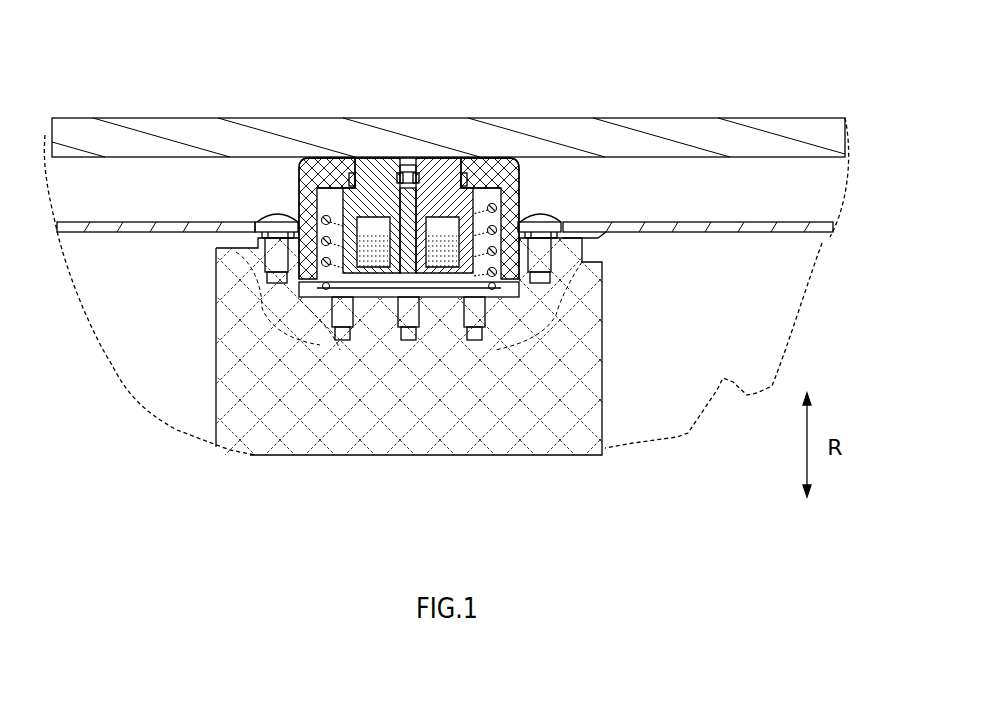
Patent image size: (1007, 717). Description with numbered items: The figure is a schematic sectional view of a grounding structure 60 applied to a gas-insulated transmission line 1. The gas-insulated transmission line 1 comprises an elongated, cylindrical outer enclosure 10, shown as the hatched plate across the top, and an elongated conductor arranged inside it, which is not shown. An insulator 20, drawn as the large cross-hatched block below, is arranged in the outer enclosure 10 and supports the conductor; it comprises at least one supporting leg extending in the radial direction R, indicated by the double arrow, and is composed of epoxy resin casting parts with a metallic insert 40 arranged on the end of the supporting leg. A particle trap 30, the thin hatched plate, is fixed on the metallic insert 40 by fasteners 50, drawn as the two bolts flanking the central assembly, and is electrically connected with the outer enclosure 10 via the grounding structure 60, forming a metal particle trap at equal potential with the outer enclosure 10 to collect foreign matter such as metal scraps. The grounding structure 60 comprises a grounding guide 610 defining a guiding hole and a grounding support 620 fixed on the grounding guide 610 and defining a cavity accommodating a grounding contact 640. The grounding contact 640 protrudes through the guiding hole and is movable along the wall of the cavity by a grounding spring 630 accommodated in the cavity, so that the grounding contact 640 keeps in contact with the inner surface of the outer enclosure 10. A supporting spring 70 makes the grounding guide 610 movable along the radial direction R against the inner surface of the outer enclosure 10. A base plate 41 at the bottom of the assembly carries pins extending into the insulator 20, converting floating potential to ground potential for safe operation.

The gas-insulated transmission line 1 is at (120, 77).
The outer enclosure 10 is at (692, 138).
The insulator 20 is at (240, 397).
The particle trap 30 is at (148, 228).
The metallic insert 40 is at (557, 308).
The bottom plate 41 is at (315, 288).
The fasteners 50 is at (270, 214).
The grounding structure 60 is at (552, 259).
The supporting spring 70 is at (497, 250).
The grounding guide 610 is at (326, 174).
The grounding support 620 is at (487, 193).
The grounding spring 630 is at (437, 273).
The grounding contact 640 is at (438, 178).